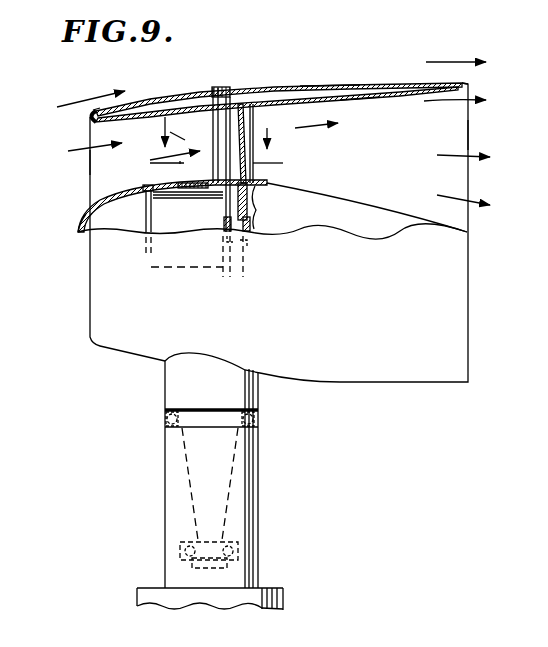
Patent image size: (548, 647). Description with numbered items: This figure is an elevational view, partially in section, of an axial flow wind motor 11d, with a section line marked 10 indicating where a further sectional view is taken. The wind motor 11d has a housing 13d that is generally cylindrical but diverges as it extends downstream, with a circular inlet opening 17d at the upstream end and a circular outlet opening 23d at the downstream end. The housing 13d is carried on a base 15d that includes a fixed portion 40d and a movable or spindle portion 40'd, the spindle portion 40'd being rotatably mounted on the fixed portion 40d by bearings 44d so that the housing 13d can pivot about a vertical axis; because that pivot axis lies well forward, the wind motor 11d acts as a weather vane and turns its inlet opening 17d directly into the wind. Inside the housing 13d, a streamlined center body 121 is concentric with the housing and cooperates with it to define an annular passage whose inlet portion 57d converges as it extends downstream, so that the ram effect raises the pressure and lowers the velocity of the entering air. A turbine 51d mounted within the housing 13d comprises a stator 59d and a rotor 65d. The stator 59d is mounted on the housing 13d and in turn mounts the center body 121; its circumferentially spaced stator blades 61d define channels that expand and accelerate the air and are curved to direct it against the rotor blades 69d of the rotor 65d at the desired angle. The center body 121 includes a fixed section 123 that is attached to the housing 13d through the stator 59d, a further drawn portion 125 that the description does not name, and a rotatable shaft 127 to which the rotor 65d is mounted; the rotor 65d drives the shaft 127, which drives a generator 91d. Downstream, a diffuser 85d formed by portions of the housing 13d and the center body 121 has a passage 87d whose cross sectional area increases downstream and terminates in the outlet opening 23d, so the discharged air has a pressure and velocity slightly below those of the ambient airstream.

The axial flow wind motor 11d is at (320, 393).
The housing 13d is at (290, 82).
The base 15d is at (270, 548).
The circular inlet opening 17d is at (91, 160).
The circular outlet opening 23d is at (469, 130).
The fixed portion 40d is at (173, 513).
The movable or spindle portion 40'd is at (150, 484).
The bearings 44d is at (168, 418).
The turbine 51d is at (214, 94).
The inlet portion 57d is at (108, 137).
The stator 59d is at (176, 133).
The stator blades 61d is at (172, 171).
The rotor 65d is at (247, 108).
The rotor blades 69d is at (262, 171).
The diffuser 85d is at (327, 93).
The passage 87d is at (354, 121).
The generator 91d is at (186, 218).
The streamlined center body 121 is at (71, 244).
The fixed section 123 is at (92, 201).
The partition web 125 is at (316, 212).
The rotatable shaft 127 is at (250, 233).
The section line 10- 10 is at (218, 140).